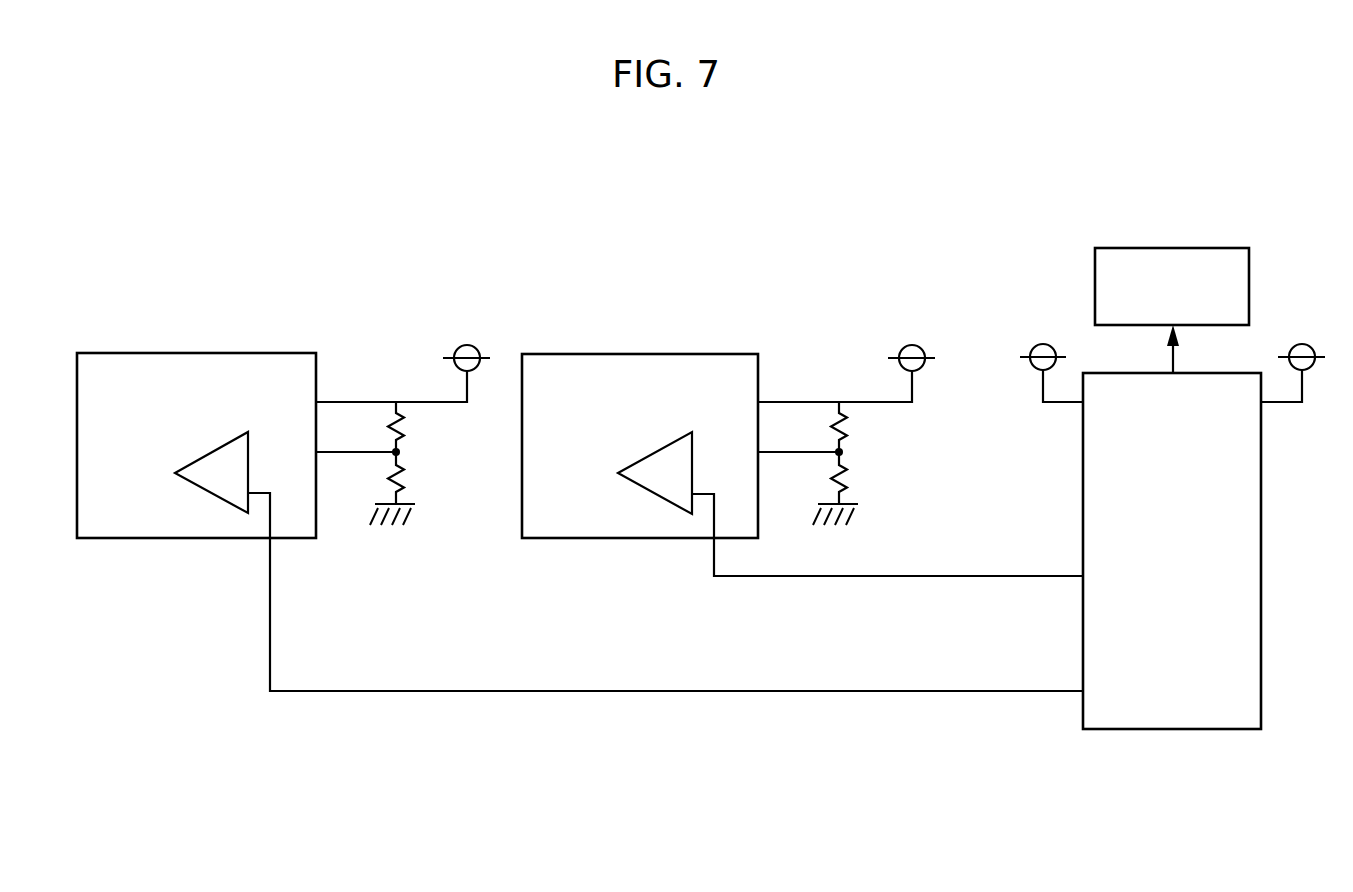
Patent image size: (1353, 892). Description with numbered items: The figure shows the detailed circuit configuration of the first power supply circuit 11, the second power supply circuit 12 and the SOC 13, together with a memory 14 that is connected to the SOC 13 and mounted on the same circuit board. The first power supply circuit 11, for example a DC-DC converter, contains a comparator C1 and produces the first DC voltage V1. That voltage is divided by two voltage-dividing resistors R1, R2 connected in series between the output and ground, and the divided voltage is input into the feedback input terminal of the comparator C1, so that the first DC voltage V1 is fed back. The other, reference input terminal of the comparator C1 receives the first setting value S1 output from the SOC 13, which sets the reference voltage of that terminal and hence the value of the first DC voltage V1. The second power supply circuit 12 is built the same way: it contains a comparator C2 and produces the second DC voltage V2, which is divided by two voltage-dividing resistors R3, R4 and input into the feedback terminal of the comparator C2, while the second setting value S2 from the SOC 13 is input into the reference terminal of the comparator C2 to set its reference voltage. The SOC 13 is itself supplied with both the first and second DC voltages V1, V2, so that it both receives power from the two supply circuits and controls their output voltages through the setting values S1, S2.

The first power supply circuit 11 is at (257, 353).
The second power supply circuit 12 is at (698, 354).
The SOC 13 is at (1261, 482).
The memory 14 is at (1249, 257).
The comparator C1 is at (207, 492).
The comparator C2 is at (653, 493).
The first setting value S1 is at (665, 587).
The second setting value S2 is at (887, 529).
The voltage-dividing resistor R1 is at (418, 429).
The voltage-dividing resistor R2 is at (409, 488).
The voltage-dividing resistor R3 is at (862, 429).
The voltage-dividing resistor R4 is at (853, 488).
The first DC voltage V1 is at (763, 357).
The second DC voltage V2 is at (1106, 357).